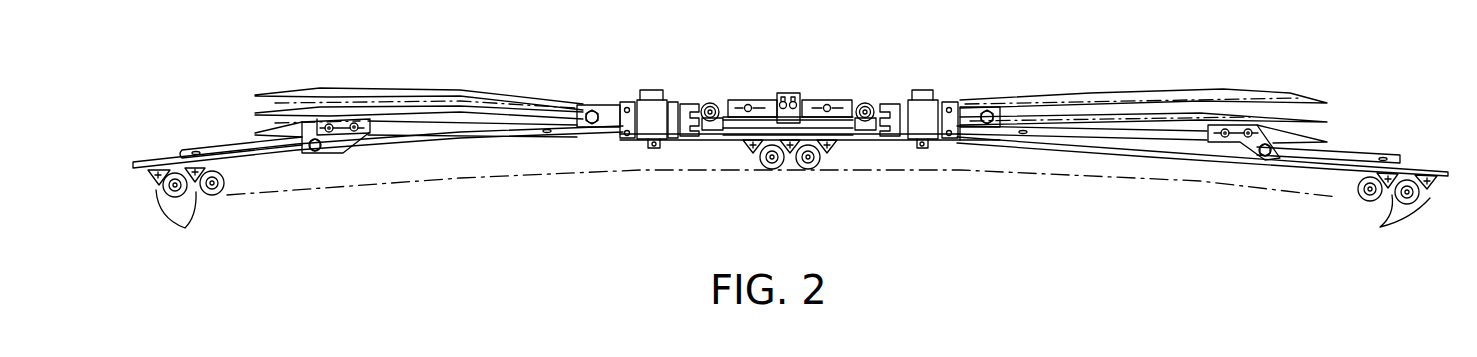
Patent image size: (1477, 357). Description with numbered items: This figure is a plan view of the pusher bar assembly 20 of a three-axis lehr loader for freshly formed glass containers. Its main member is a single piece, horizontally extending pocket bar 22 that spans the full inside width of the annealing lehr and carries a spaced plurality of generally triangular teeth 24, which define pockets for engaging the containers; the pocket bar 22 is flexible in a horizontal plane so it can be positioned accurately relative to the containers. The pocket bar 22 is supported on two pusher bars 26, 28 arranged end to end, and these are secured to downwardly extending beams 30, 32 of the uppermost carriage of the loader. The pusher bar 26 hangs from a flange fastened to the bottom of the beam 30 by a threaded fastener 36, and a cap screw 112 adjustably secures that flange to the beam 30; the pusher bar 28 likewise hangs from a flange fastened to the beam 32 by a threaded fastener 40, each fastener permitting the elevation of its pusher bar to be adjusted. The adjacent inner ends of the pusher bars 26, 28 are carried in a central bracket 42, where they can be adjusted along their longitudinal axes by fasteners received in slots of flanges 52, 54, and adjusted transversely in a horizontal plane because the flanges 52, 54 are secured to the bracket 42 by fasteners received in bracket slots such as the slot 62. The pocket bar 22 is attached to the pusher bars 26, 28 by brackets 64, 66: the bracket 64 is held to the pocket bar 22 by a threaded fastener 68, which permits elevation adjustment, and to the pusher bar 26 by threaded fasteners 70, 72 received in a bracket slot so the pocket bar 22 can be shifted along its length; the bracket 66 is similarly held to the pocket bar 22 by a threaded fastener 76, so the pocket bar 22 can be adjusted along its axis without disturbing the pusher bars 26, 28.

The pusher bar assembly 20 is at (952, 50).
The pocket bar 22 is at (1410, 170).
The teeth 24 is at (186, 216).
The pusher bar 26 is at (463, 127).
The pusher bar 28 is at (1118, 127).
The beam 30 is at (647, 127).
The beam 32 is at (943, 127).
The threaded fastener 36 is at (592, 124).
The threaded fastener 40 is at (985, 132).
The bracket 42 is at (790, 93).
The flange 52 is at (757, 100).
The flange 54 is at (815, 100).
The slot 62 is at (868, 104).
The bracket 64 is at (345, 143).
The bracket 66 is at (1240, 148).
The threaded fastener 68 is at (316, 150).
The threaded fastener 70 is at (329, 128).
The threaded fastener 72 is at (354, 127).
The threaded fastener 76 is at (1265, 155).
The cap screw 112 is at (710, 104).